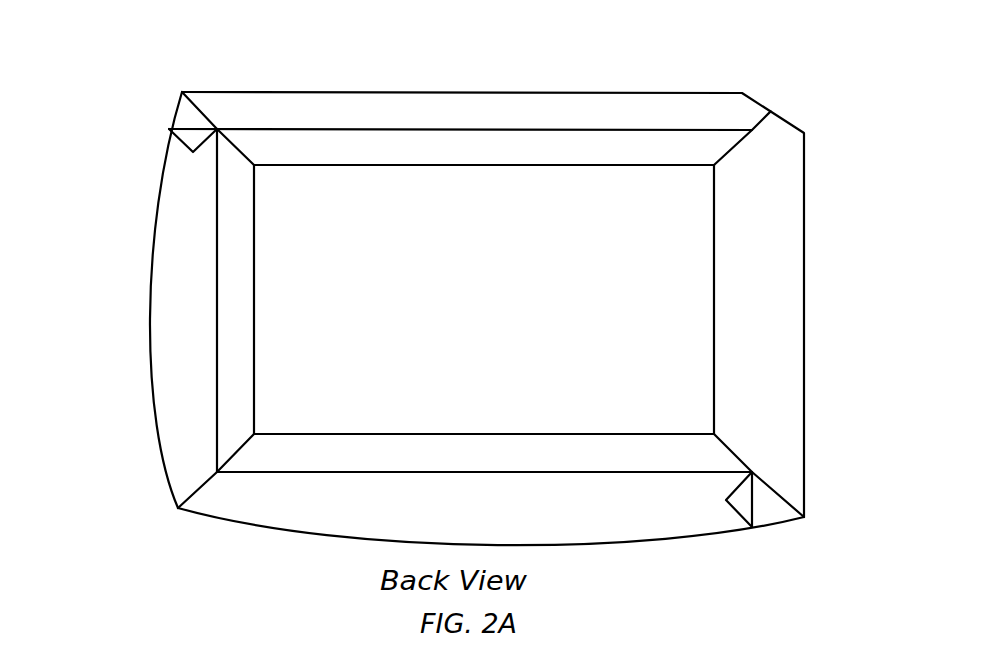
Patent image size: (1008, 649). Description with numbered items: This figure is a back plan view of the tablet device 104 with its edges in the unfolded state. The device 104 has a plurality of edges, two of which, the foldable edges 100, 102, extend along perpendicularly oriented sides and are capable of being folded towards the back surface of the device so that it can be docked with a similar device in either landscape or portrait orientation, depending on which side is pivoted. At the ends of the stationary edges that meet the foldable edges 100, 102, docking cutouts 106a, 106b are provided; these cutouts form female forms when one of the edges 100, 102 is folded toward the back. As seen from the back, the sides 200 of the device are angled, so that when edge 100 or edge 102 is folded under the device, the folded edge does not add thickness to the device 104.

The foldable edge 100 is at (463, 306).
The foldable edge 102 is at (272, 118).
The tablet device 104 is at (137, 113).
The docking cutout 106a is at (740, 504).
The docking cutout 106b is at (190, 128).
The angled sides 200 is at (527, 138).